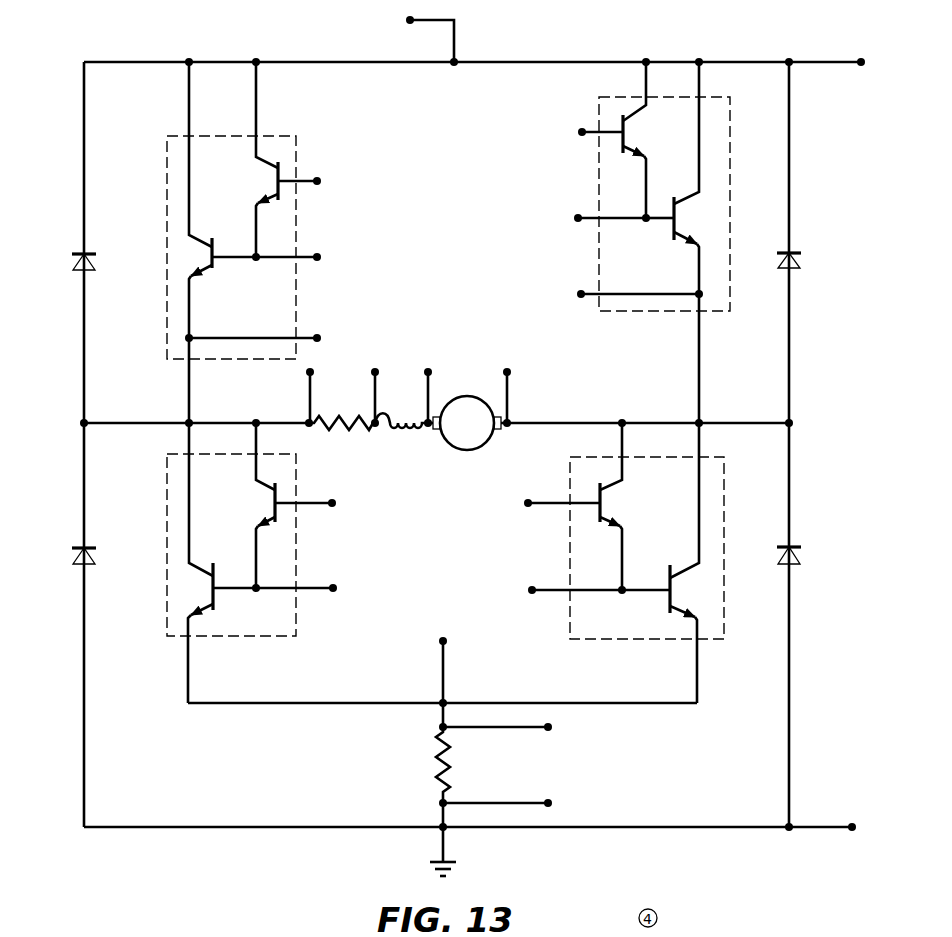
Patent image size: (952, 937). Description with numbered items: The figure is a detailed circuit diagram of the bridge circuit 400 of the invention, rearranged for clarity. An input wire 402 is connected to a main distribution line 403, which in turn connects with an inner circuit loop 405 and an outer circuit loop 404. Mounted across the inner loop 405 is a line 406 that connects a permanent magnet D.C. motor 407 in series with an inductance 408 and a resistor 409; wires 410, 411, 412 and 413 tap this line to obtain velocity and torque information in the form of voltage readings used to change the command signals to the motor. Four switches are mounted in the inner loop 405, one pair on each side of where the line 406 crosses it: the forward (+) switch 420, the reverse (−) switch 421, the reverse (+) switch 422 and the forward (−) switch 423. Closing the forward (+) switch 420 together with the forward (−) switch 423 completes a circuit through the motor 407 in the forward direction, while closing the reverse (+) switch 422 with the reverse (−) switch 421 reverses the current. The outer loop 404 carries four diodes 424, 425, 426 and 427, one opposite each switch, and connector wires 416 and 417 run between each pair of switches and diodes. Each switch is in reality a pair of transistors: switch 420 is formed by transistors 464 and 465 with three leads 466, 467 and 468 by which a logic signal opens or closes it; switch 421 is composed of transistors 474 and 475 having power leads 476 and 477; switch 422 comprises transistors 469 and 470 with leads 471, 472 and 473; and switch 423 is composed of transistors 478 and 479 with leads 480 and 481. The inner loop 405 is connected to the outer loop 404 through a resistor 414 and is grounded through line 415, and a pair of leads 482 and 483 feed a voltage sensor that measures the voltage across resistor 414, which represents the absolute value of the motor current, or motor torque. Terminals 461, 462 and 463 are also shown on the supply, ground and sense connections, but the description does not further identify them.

The bridge circuit 400 is at (612, 843).
The input wire 402 is at (456, 46).
The main distribution line 403 is at (590, 62).
The outer circuit loop 404 is at (298, 830).
The inner circuit loop 405 is at (633, 705).
The line 406 is at (590, 423).
The permanent magnet D.C. motor 407 is at (478, 450).
The inductance 408 is at (410, 432).
The resistor 409 is at (345, 432).
The wire 410 is at (312, 372).
The wire 411 is at (377, 372).
The wire 412 is at (432, 372).
The wire 413 is at (512, 401).
The resistor 414 is at (452, 752).
The line 415 is at (445, 857).
The connector wire 416 is at (105, 423).
The connector wire 417 is at (760, 423).
The forward (+) switch 420 is at (296, 160).
The reverse (−) switch 421 is at (296, 558).
The reverse (+) switch 422 is at (597, 116).
The forward (−) switch 423 is at (568, 535).
The diode 424 is at (72, 262).
The diode 425 is at (74, 560).
The diode 426 is at (803, 256).
The diode 427 is at (802, 558).
The supply terminal 461 is at (822, 62).
The ground terminal 462 is at (790, 840).
The sense terminal 463 is at (445, 684).
The transistor 464 is at (266, 176).
The transistor 465 is at (220, 272).
The lead 466 is at (319, 183).
The lead 467 is at (319, 259).
The lead 468 is at (319, 336).
The transistor 469 is at (636, 117).
The transistor 470 is at (686, 242).
The lead 471 is at (580, 136).
The lead 472 is at (574, 232).
The lead 473 is at (579, 284).
The transistor 474 is at (268, 490).
The transistor 475 is at (201, 574).
The power lead 476 is at (334, 505).
The power lead 477 is at (335, 590).
The transistor 478 is at (613, 490).
The transistor 479 is at (666, 602).
The lead 480 is at (526, 506).
The lead 481 is at (530, 594).
The lead 482 is at (552, 730).
The lead 483 is at (552, 805).